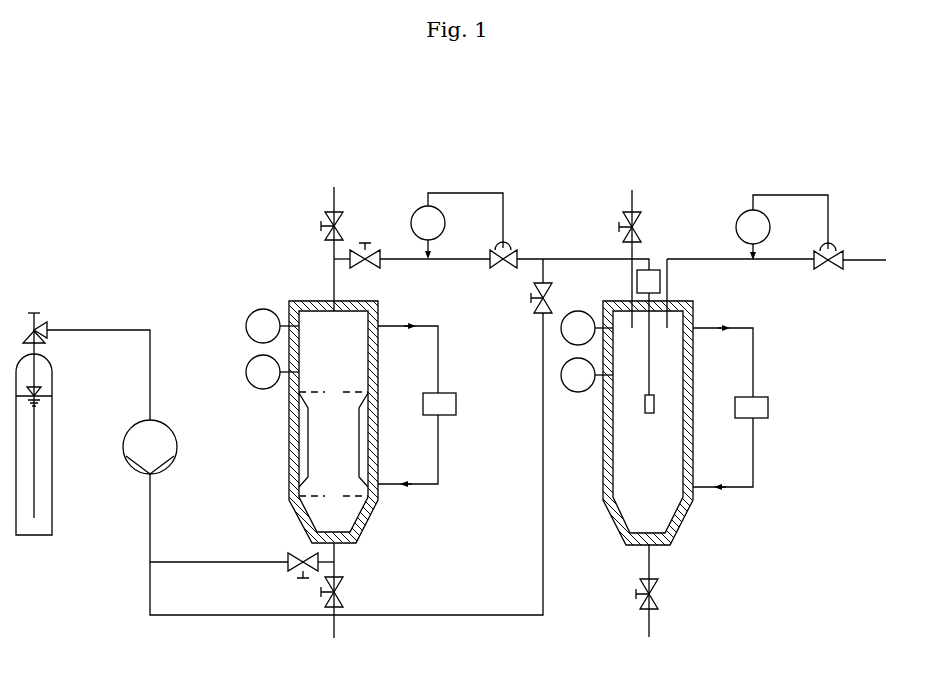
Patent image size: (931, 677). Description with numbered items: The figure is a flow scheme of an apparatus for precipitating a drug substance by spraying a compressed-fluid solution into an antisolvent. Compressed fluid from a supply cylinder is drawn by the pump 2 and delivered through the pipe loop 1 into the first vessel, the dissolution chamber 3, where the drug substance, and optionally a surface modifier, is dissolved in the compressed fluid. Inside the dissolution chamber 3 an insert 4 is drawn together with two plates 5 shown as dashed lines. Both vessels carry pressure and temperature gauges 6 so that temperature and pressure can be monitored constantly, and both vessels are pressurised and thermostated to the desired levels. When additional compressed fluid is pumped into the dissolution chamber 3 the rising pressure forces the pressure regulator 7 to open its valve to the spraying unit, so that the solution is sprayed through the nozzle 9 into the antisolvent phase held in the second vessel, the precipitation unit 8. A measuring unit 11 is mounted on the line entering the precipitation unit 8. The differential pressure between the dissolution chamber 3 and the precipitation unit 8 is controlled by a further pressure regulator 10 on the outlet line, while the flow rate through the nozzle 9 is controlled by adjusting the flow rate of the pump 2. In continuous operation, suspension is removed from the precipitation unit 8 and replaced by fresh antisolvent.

The recirculation pipe loop 1 is at (351, 448).
The pump 2 is at (144, 456).
The dissolution chamber 3 is at (361, 412).
The internal insert / cage 4 is at (333, 440).
The grid / sieve plates 5 is at (333, 444).
The pressure and temperature gauges 6 is at (424, 350).
The pressure regulator 7 is at (464, 230).
The precipitation unit 8 is at (676, 413).
The nozzle 9 is at (648, 365).
The pressure regulator 10 is at (789, 232).
The measuring unit 11 is at (648, 281).